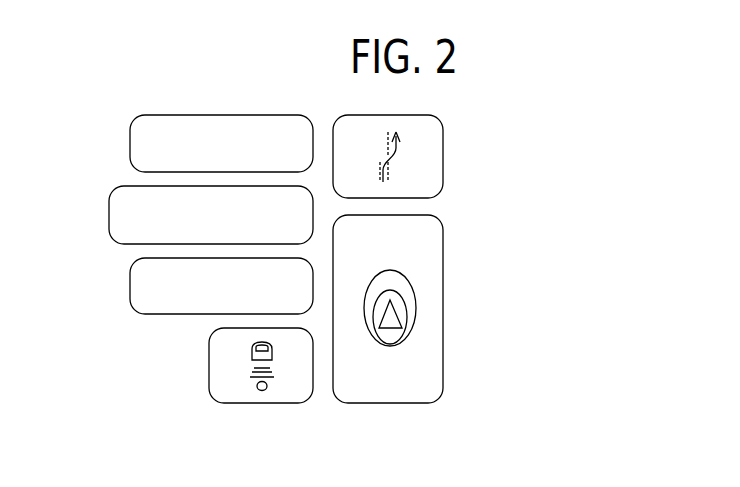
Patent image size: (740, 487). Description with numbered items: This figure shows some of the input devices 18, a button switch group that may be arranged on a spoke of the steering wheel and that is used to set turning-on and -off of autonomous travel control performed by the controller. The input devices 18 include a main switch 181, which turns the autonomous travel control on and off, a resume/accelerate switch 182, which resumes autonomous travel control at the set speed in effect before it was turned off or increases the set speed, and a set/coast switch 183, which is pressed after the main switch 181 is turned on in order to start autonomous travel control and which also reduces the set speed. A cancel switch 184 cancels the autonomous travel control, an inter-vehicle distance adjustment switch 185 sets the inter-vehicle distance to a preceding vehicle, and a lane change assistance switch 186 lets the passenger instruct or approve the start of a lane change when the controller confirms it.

The input devices 18 is at (591, 146).
The main switch 181 is at (443, 231).
The resume/accelerate switch 182 is at (130, 130).
The set/coast switch 183 is at (130, 274).
The cancel switch 184 is at (109, 200).
The inter-vehicle distance adjustment switch 185 is at (209, 338).
The lane change assistance switch 186 is at (443, 131).